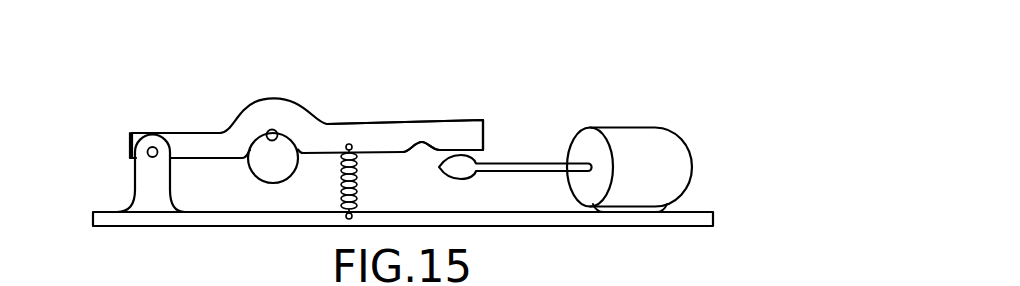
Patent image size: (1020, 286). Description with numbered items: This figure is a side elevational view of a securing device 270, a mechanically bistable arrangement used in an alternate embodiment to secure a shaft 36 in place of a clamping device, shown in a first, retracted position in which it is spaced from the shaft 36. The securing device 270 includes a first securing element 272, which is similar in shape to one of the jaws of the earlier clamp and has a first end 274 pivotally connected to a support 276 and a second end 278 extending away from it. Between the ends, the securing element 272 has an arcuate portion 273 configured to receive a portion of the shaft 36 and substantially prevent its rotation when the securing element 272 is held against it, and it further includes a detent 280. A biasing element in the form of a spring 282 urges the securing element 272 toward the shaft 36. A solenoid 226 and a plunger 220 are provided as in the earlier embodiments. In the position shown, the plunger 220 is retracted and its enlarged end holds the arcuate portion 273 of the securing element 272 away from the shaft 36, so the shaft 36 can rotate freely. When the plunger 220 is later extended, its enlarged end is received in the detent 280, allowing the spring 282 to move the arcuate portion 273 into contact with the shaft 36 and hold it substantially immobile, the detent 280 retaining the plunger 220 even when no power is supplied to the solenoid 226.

The securing device 270 is at (342, 105).
The first securing element 272 is at (187, 142).
The arcuate portion 273 is at (272, 130).
The first end 274 is at (132, 135).
The support 276 is at (138, 190).
The shaft 36 is at (262, 163).
The second end 278 is at (450, 138).
The detent 280 is at (407, 145).
The spring 282 is at (360, 188).
The plunger 220 is at (533, 163).
The solenoid 226 is at (677, 165).